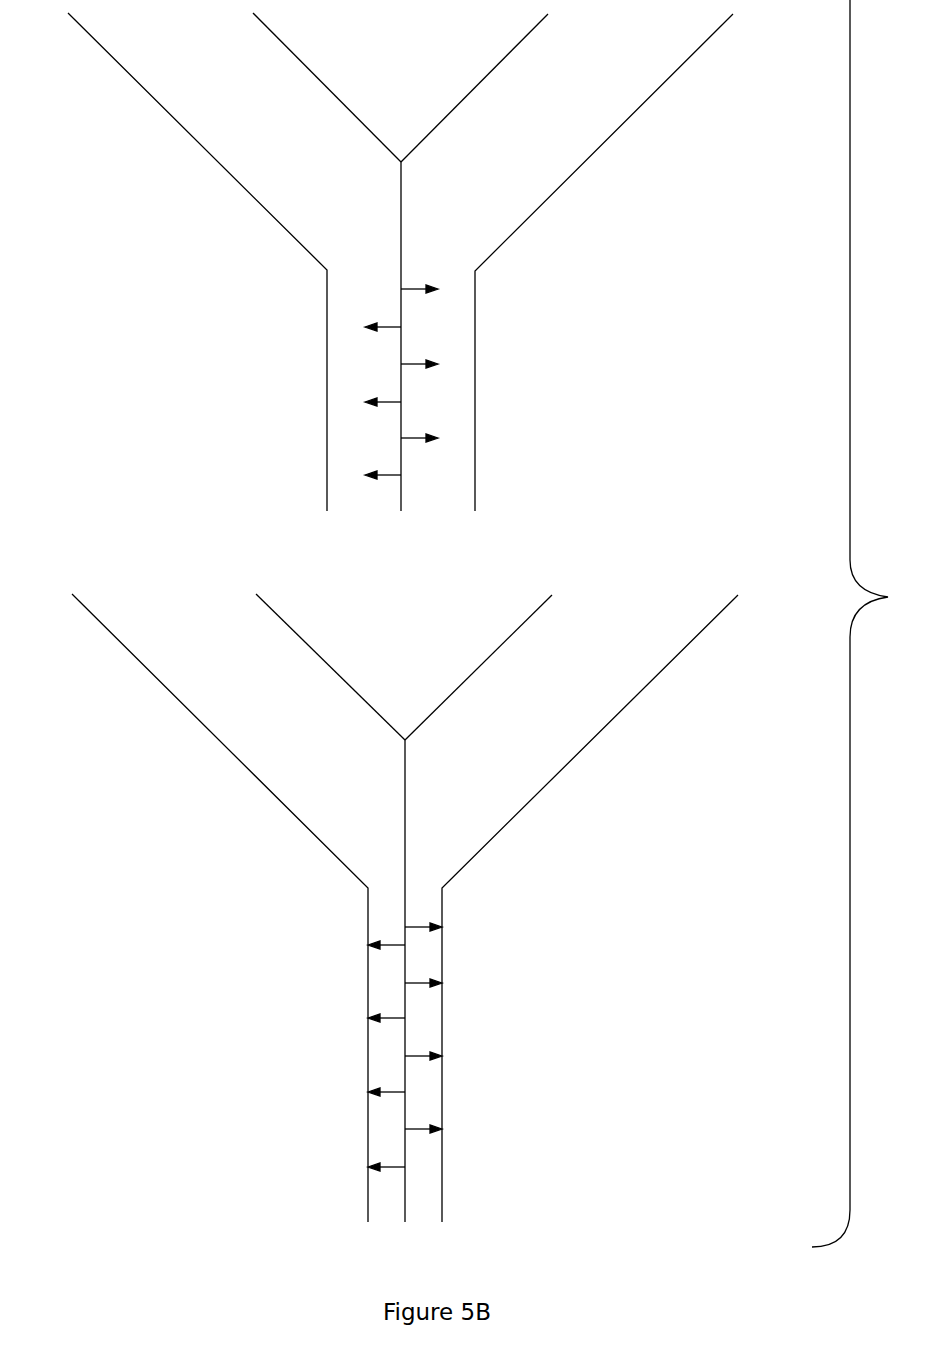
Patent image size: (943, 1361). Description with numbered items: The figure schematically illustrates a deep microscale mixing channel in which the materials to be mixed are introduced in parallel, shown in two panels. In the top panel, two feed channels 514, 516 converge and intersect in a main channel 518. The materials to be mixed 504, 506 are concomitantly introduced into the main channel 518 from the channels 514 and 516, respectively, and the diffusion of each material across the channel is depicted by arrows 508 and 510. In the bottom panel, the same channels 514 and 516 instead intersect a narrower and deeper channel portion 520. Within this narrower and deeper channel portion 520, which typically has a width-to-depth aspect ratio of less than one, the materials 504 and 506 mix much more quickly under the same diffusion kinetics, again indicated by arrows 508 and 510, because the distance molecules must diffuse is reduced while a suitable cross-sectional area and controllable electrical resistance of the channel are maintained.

The material to be mixed 504 is at (262, 143).
The material to be mixed 506 is at (542, 143).
The arrow 508 is at (351, 329).
The arrow 510 is at (454, 358).
The channel 514 is at (335, 73).
The channel 516 is at (480, 62).
The main channel 518 is at (317, 455).
The narrower and deeper channel portion 520 is at (358, 1128).